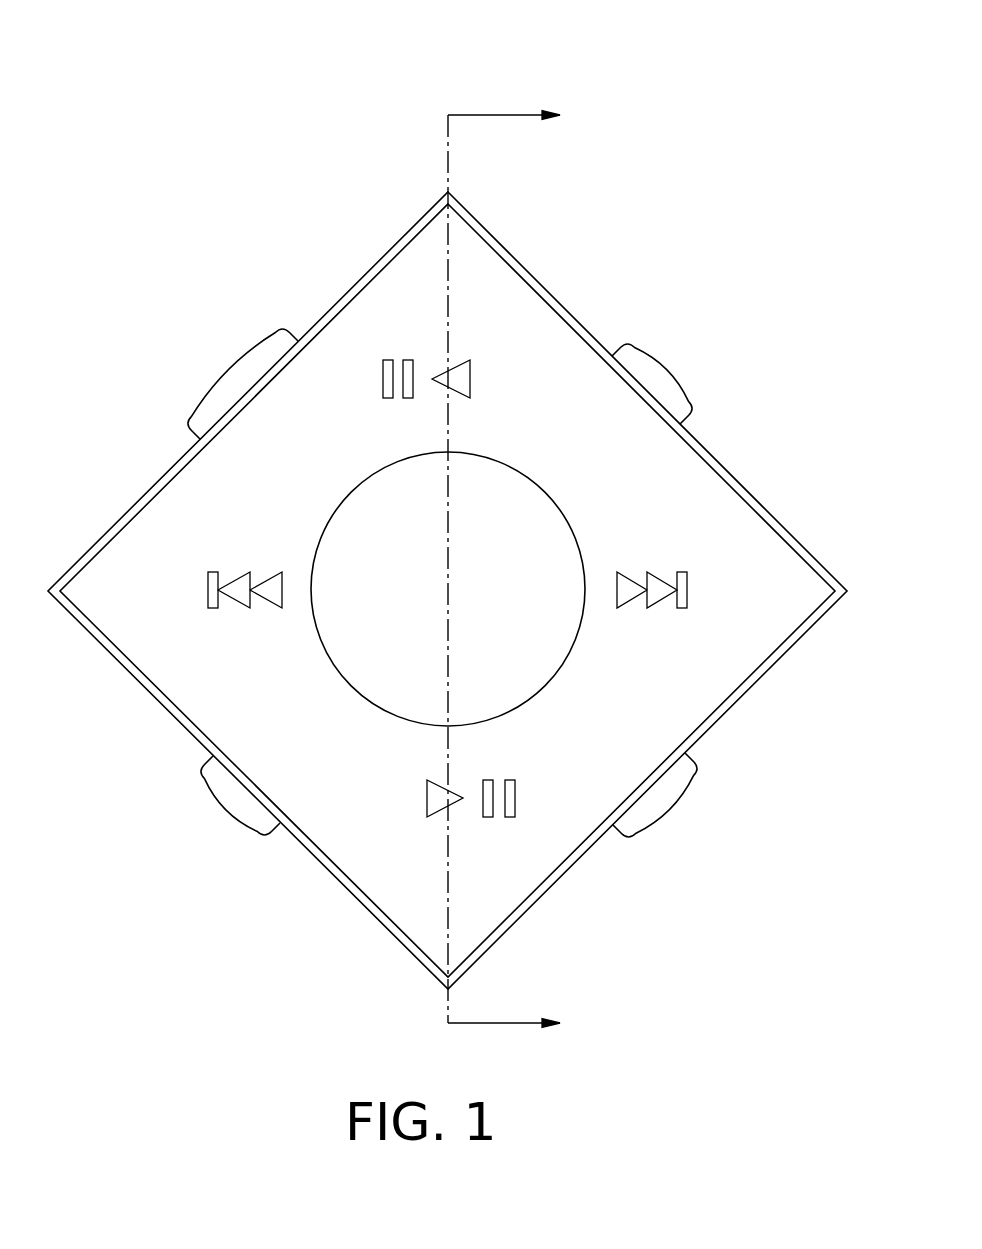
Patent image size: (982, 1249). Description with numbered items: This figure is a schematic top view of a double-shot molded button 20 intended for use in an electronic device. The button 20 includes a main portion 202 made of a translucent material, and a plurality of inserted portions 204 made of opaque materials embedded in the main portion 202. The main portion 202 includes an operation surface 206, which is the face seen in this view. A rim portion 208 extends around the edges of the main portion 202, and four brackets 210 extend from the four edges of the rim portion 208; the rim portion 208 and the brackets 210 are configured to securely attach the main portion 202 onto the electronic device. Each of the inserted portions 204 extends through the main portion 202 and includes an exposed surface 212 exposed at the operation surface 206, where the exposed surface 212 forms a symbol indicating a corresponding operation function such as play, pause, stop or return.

The double-shot molded button 20 is at (456, 27).
The main portion 202 is at (675, 663).
The inserted portions 204 is at (282, 590).
The operation surface 206 is at (232, 513).
The rim portion 208 is at (537, 283).
The brackets 210 is at (660, 378).
The exposed surface 212 is at (240, 592).